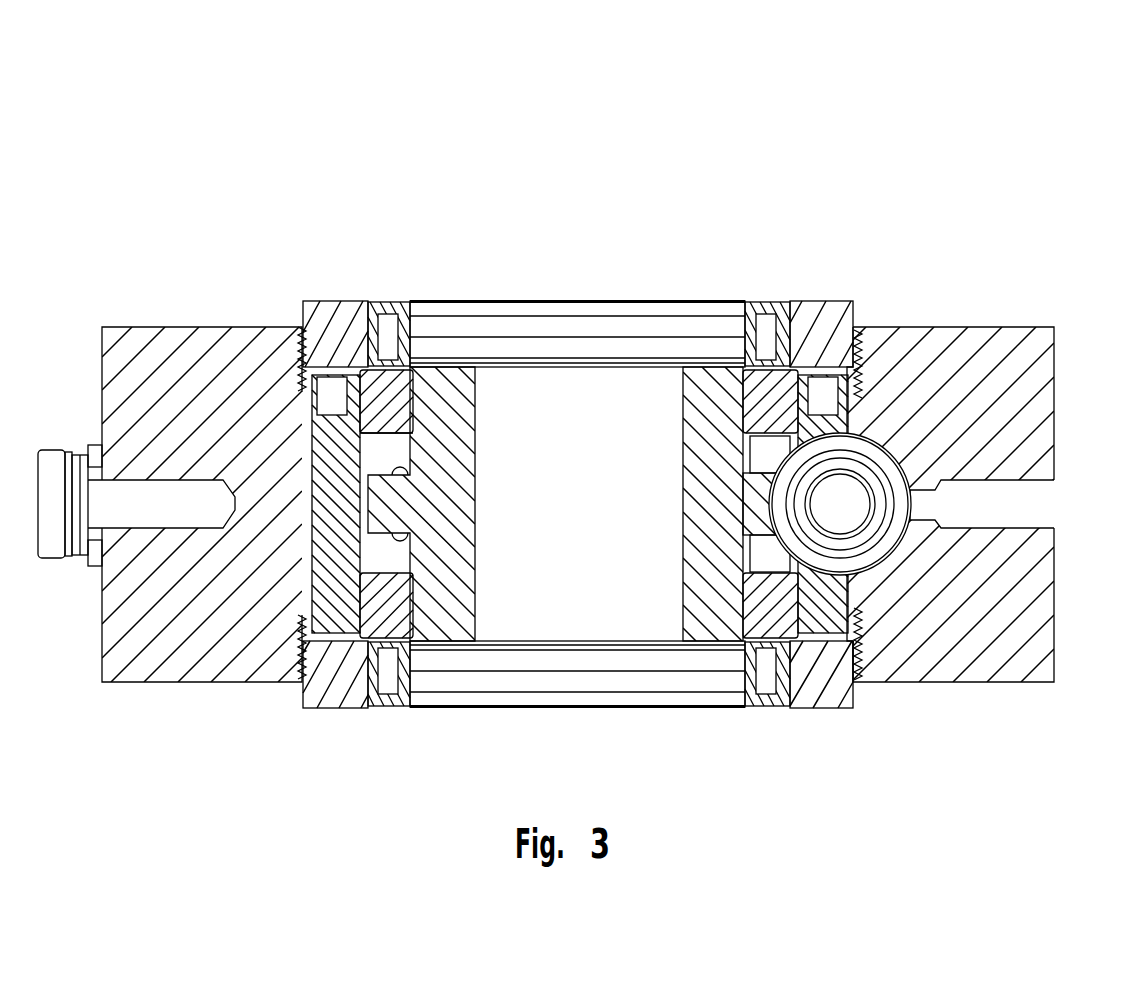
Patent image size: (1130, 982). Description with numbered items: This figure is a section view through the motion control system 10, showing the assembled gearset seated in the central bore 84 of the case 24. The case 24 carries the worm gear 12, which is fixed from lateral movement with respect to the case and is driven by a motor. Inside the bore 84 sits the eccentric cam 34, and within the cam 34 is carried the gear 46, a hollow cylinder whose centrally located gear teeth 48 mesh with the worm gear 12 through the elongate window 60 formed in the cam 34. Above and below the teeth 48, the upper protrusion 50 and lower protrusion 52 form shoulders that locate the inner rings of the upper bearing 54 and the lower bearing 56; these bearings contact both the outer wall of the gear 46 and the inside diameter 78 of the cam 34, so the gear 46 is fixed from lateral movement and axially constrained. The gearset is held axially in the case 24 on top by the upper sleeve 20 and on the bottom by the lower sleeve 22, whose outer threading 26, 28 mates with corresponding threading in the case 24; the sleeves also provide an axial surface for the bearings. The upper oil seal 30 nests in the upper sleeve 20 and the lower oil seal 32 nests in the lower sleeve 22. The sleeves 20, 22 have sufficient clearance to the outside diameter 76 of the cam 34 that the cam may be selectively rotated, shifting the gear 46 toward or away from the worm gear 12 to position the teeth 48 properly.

The motion control system 10 is at (486, 170).
The worm gear 12 is at (893, 476).
The upper sleeve 20 is at (826, 300).
The lower sleeve 22 is at (822, 708).
The case 24 is at (242, 327).
The threading 26 is at (858, 337).
The threading 28 is at (866, 652).
The upper oil seal 30 is at (760, 300).
The lower oil seal 32 is at (762, 708).
The cam 34 is at (325, 577).
The gear 46 is at (442, 505).
The gear teeth 48 is at (800, 470).
The upper protrusion 50 is at (410, 470).
The lower protrusion 52 is at (400, 530).
The upper bearing 54 is at (393, 395).
The lower bearing 56 is at (397, 615).
The elongate window 60 is at (763, 448).
The outside diameter 76 is at (313, 423).
The inside diameter 78 is at (376, 433).
The central bore 84 is at (330, 422).